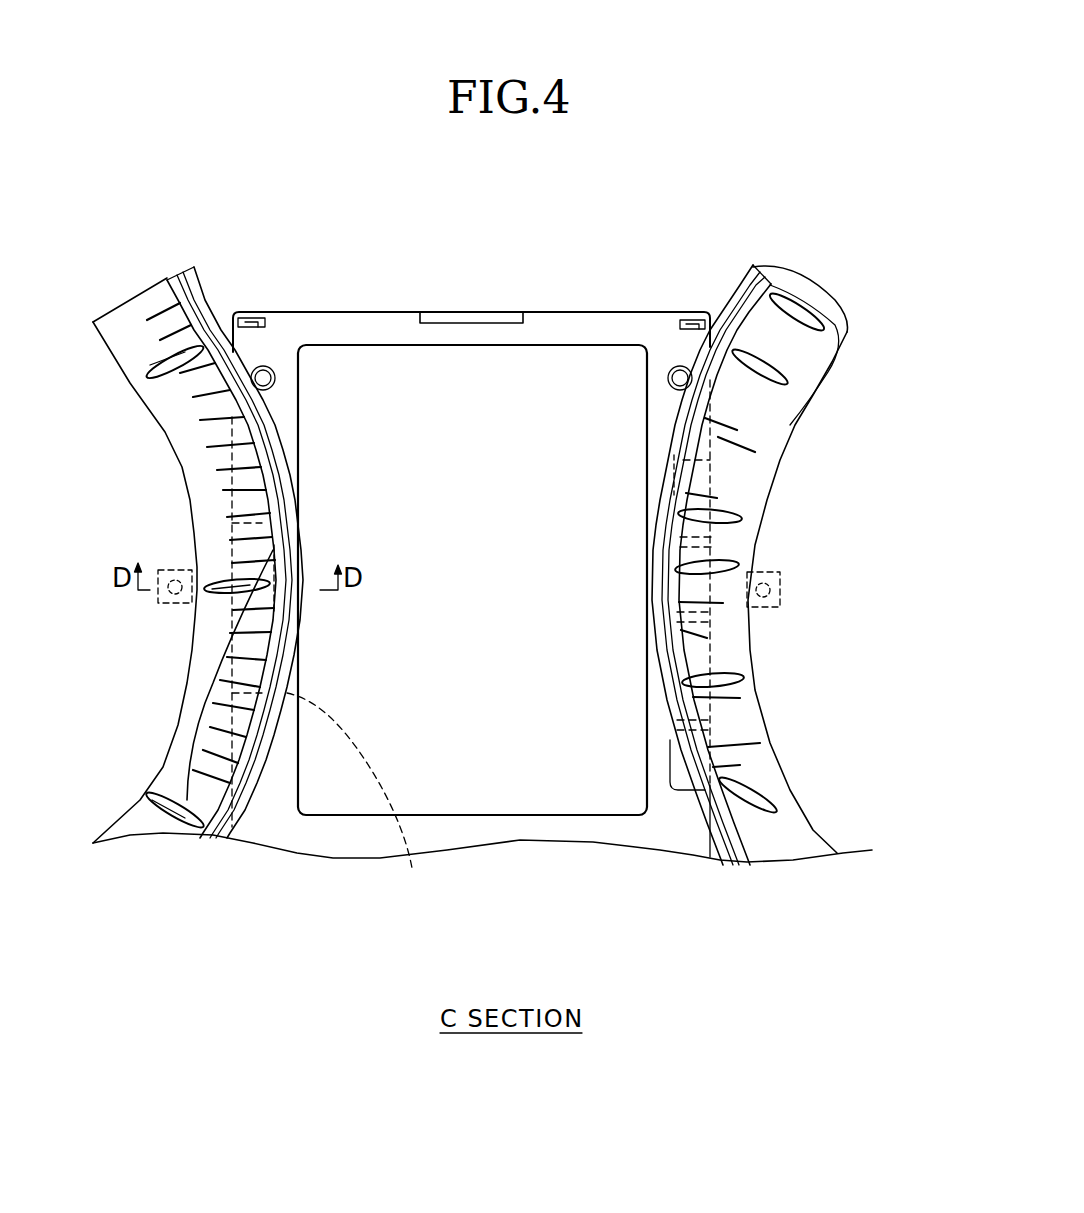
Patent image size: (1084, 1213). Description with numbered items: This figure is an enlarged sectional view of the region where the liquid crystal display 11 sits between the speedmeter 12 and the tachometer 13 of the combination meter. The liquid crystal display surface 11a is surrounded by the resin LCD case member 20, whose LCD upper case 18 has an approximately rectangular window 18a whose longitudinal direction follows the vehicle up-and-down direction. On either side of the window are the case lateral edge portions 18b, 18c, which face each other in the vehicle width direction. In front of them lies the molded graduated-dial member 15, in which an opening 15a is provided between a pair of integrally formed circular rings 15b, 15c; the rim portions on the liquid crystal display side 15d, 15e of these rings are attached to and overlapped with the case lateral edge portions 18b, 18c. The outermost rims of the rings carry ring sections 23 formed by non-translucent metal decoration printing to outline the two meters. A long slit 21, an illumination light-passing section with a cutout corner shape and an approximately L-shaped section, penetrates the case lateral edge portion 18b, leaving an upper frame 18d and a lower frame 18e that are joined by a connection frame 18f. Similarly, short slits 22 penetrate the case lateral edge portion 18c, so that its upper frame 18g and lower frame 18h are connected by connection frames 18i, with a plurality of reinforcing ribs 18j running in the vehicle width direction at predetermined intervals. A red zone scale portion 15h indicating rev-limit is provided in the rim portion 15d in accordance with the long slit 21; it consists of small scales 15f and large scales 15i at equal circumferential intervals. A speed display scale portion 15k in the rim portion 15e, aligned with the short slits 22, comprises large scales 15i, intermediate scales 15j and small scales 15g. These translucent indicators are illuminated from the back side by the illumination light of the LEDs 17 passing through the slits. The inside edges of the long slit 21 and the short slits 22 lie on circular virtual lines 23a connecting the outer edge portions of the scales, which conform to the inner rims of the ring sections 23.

The liquid crystal display 11 is at (710, 310).
The liquid crystal display surface 11a is at (613, 363).
The speedmeter 12 is at (913, 403).
The tachometer 13 is at (118, 434).
The molded graduated-dial member 15 is at (197, 277).
The opening 15a is at (300, 575).
The circular ring 15b is at (207, 293).
The circular ring 15c is at (753, 266).
The rim portion on the liquid crystal display side 15d is at (268, 413).
The rim portion on the liquid crystal display side 15e is at (663, 732).
The small scale 15f is at (240, 513).
The small scale 15g is at (740, 452).
The red zone scale portion 15h is at (412, 588).
The large scale 15i is at (210, 590).
The intermediate scale 15j is at (712, 610).
The speed display scale portion 15k is at (870, 412).
The LED 17 is at (190, 570).
The LCD upper case 18 is at (655, 345).
The window 18a is at (647, 413).
The case lateral edge portion 18b is at (187, 800).
The case lateral edge portion 18c is at (710, 480).
The upper frame 18d is at (290, 467).
The lower frame 18e is at (647, 796).
The connection frame 18f is at (300, 575).
The upper frame 18g is at (665, 452).
The lower frame 18h is at (660, 680).
The connection frame 18i is at (645, 592).
The reinforcing rib 18j is at (712, 543).
The LCD case member 20 is at (662, 310).
The long slit 21 is at (359, 794).
The short slit 22 is at (660, 527).
The ring section 23 is at (217, 317).
The circular virtual line 23a is at (262, 578).